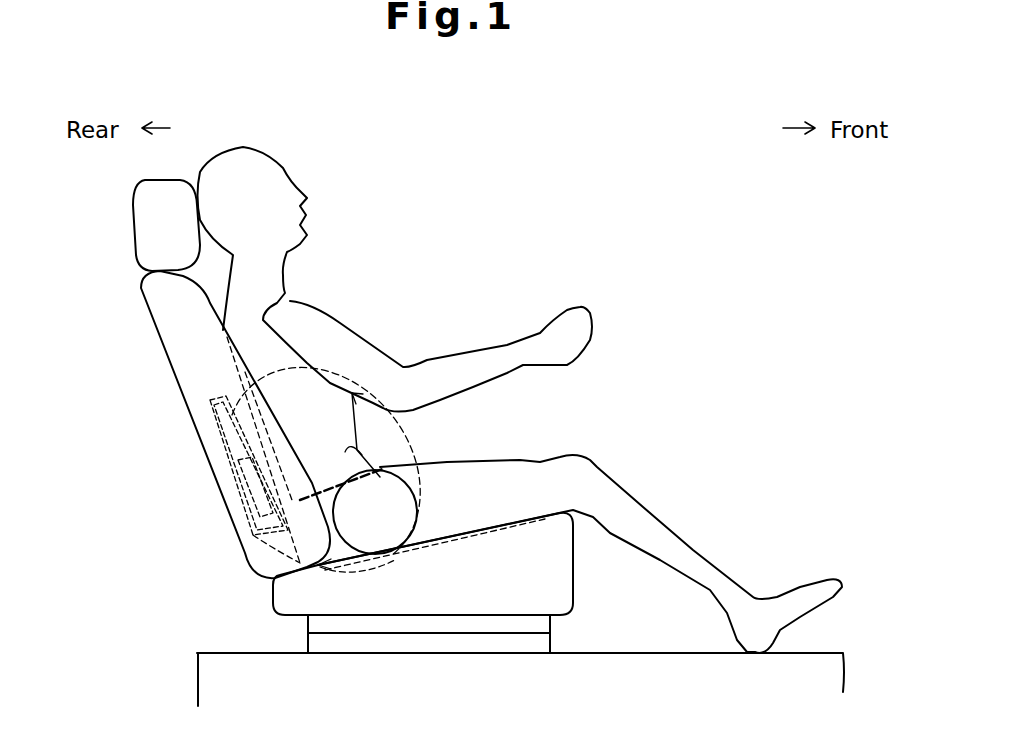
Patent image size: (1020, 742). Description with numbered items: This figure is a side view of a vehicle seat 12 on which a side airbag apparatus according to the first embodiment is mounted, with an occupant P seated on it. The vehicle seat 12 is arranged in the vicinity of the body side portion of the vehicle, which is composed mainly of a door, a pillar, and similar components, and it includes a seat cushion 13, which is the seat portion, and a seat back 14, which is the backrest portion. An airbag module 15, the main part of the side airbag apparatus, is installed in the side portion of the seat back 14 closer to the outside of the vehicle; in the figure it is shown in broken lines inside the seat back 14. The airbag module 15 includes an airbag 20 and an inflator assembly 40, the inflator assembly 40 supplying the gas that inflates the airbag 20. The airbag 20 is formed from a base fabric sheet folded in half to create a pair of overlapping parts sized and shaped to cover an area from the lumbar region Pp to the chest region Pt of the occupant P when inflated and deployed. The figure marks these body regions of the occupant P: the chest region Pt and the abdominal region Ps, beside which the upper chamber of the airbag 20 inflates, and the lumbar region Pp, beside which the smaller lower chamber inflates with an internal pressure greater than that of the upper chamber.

The vehicle seat 12 is at (177, 547).
The seat cushion 13 is at (280, 598).
The seat back 14 is at (258, 558).
The airbag module 15 is at (217, 424).
The airbag 20 is at (273, 377).
The inflator assembly 40 is at (245, 483).
The occupant P is at (212, 157).
The chest region Pt is at (386, 391).
The abdominal region Ps is at (358, 453).
The lumbar region Pp is at (320, 568).